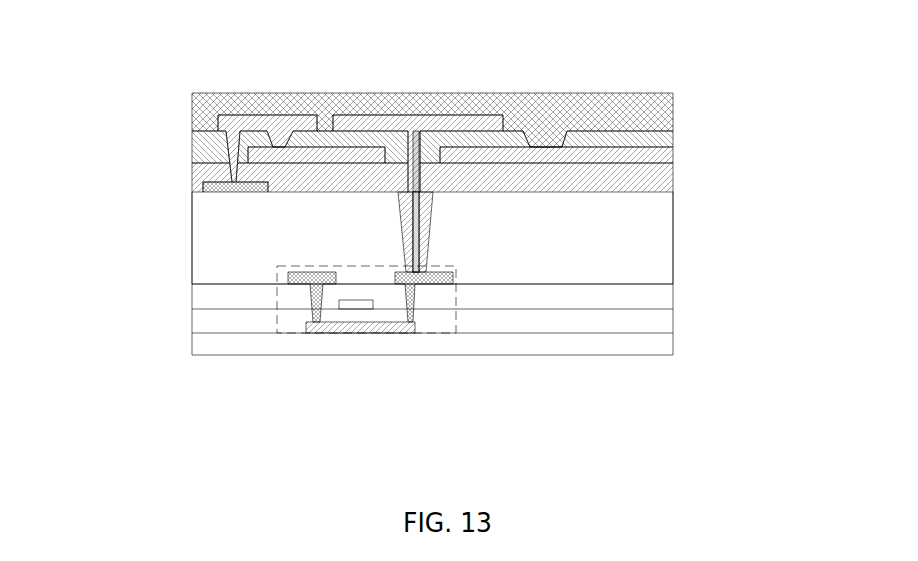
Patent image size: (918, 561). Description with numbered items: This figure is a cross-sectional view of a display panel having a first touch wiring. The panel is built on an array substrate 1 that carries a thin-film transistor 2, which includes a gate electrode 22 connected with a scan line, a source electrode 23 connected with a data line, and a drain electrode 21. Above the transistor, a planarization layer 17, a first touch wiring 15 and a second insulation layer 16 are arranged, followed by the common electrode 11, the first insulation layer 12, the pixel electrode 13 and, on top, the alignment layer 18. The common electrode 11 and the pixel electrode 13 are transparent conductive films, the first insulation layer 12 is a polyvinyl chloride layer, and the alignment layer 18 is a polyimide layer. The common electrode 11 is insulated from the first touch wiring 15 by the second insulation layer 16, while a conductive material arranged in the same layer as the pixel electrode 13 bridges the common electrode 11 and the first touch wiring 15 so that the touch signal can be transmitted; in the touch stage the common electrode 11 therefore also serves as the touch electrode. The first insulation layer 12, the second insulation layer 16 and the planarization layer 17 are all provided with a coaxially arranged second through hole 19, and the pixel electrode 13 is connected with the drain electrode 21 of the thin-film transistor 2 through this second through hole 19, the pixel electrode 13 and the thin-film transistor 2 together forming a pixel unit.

The array substrate 1 is at (633, 360).
The thin-film transistor 2 is at (363, 340).
The common electrode 11 is at (365, 157).
The first insulation layer 12 is at (652, 138).
The pixel electrode 13 is at (432, 117).
The first touch wiring 15 is at (207, 193).
The second insulation layer 16 is at (193, 172).
The planarization layer 17 is at (213, 250).
The alignment layer 18 is at (513, 100).
The second through hole 19 is at (433, 205).
The drain electrode 21 is at (430, 287).
The gate electrode 22 is at (333, 330).
The source electrode 23 is at (300, 282).